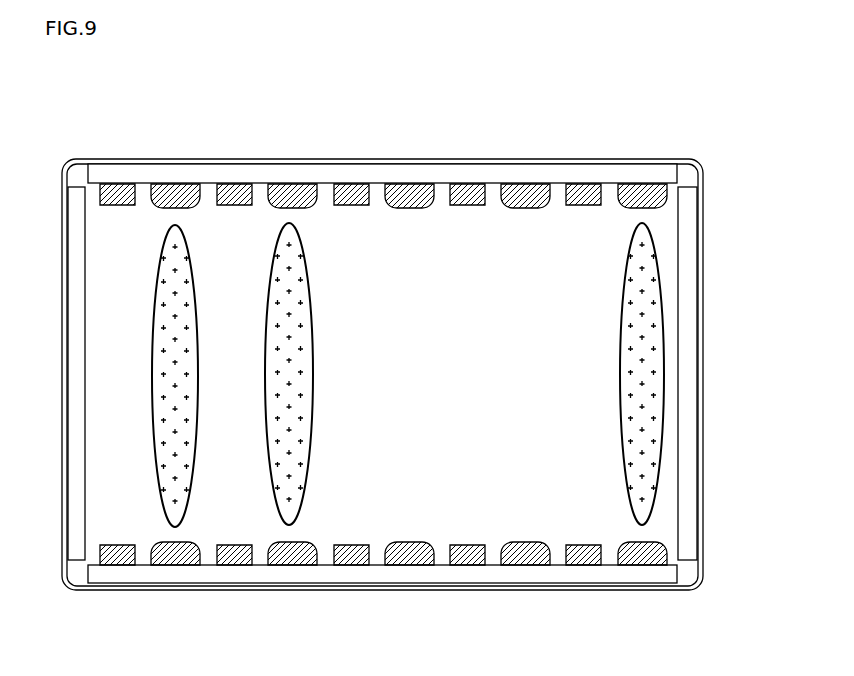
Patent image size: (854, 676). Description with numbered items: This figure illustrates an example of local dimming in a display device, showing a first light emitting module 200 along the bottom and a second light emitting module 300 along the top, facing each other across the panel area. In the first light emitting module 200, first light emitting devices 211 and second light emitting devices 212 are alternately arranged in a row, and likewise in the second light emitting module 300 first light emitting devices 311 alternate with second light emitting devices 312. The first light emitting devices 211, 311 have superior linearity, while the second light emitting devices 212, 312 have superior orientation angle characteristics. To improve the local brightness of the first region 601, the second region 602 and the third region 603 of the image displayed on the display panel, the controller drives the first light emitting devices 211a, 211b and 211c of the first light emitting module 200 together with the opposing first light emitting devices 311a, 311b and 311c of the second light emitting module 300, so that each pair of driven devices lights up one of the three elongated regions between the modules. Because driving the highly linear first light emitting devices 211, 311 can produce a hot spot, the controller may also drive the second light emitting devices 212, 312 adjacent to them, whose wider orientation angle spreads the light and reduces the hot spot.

The first light emitting module 200 is at (694, 575).
The second light emitting module 300 is at (694, 175).
The first light emitting device 211 is at (529, 576).
The first light emitting device 211a is at (180, 566).
The first light emitting device 211b is at (297, 566).
The first light emitting device 211c is at (648, 557).
The second light emitting device 212 is at (466, 576).
The first light emitting device 311 is at (523, 175).
The first light emitting device 311a is at (178, 187).
The first light emitting device 311b is at (303, 206).
The first light emitting device 311c is at (649, 206).
The second light emitting device 312 is at (464, 175).
The first region 601 is at (166, 242).
The second region 602 is at (290, 237).
The third region 603 is at (630, 257).